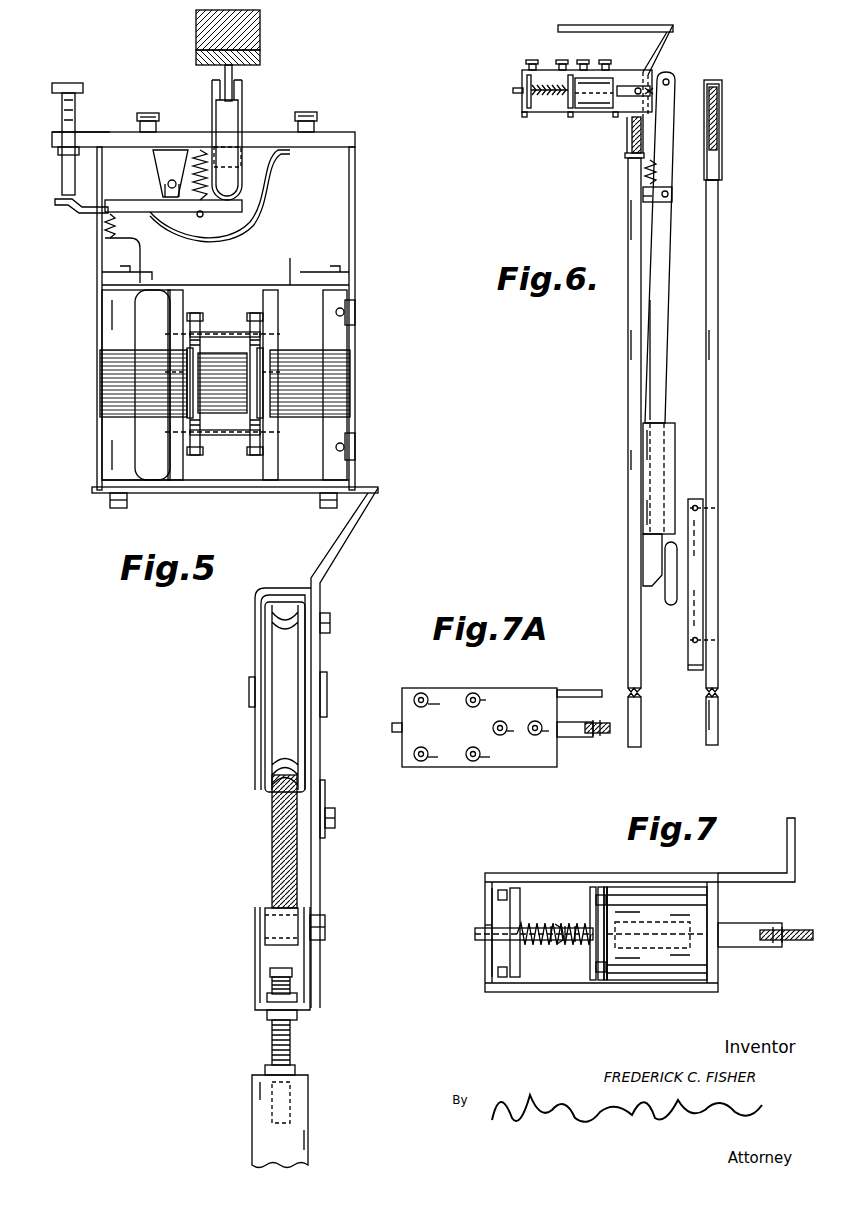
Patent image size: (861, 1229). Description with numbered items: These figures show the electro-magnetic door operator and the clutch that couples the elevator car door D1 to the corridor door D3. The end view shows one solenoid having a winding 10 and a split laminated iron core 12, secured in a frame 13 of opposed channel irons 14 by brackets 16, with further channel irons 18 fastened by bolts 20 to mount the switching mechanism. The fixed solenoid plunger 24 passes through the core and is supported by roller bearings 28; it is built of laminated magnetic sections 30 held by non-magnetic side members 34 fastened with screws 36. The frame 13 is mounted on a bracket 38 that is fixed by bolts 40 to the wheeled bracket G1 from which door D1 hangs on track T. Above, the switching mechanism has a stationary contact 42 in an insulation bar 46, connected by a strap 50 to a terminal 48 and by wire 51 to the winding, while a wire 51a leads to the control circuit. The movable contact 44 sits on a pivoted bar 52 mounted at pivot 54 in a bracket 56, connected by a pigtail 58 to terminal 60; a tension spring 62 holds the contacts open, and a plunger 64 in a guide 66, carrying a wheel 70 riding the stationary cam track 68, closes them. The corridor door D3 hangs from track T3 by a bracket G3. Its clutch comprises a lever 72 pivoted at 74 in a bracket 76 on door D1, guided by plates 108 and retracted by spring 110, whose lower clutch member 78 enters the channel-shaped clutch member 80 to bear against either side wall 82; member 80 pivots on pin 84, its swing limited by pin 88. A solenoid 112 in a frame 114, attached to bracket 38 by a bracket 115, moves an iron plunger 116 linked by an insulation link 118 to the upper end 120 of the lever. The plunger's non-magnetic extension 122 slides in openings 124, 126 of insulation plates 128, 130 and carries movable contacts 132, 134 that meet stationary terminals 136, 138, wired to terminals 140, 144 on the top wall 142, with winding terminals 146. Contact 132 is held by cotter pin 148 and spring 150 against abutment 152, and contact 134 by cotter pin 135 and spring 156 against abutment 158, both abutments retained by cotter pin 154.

In FIG. 5, the winding 10 is at (150, 311).
In FIG. 5, the laminated iron core 12 is at (238, 404).
In FIG. 5, the frame 13 is at (358, 421).
In FIG. 5, the channel irons 14 is at (168, 392).
In FIG. 5, the brackets 16 is at (352, 318).
In FIG. 5, the channel irons 18 is at (97, 247).
In FIG. 5, the bolts 20 is at (102, 272).
In FIG. 5, the solenoid plunger 24 is at (140, 360).
In FIG. 5, the roller bearings 28 is at (256, 314).
In FIG. 5, the magnetic sections 30 is at (190, 416).
In FIG. 5, the longitudinally extending members 34 is at (193, 386).
In FIG. 5, the bolts or screws 36 is at (268, 373).
In FIG. 5, the bracket 38 is at (362, 527).
In FIG. 6, the bracket 38 is at (673, 40).
In FIG. 5, the bolts 40 is at (331, 623).
In FIG. 5, the stationary contact member 42 is at (62, 168).
In FIG. 5, the movable contact member 44 is at (62, 208).
In FIG. 5, the bar of insulation material 46 is at (93, 132).
In FIG. 5, the terminal 48 is at (148, 113).
In FIG. 5, the conductor strap 50 is at (100, 131).
In FIG. 5, the wire 51 is at (141, 242).
In FIG. 5, the wire 51a is at (292, 262).
In FIG. 5, the bar of insulation material 52 is at (243, 206).
In FIG. 5, the pivot 54 is at (174, 180).
In FIG. 5, the bracket 56 is at (166, 150).
In FIG. 5, the pigtail 58 is at (255, 223).
In FIG. 5, the terminal 60 is at (318, 122).
In FIG. 5, the tension spring 62 is at (206, 184).
In FIG. 5, the plunger 64 is at (241, 113).
In FIG. 5, the guide member 66 is at (246, 158).
In FIG. 5, the cam track 68 is at (264, 54).
In FIG. 5, the wheel 70 is at (233, 74).
In FIG. 6, the lever 72 is at (652, 375).
In FIG. 6, the pivot 74 is at (667, 202).
In FIG. 6, the bracket 76 is at (648, 200).
In FIG. 6, the clutch member 78 is at (665, 580).
In FIG. 6, the clutch member 80 is at (687, 664).
In FIG. 6, the side walls 82 is at (704, 602).
In FIG. 6, the pivot pin 84 is at (708, 504).
In FIG. 6, the pin 88 is at (708, 642).
In FIG. 6, the guide plates 108 is at (648, 437).
In FIG. 6, the spring 110 is at (656, 175).
In FIG. 6, the solenoid 112 is at (598, 108).
In FIG. 7, the solenoid 112 is at (659, 976).
In FIG. 6, the casing or frame 114 is at (546, 117).
In FIG. 7, the casing or frame 114 is at (689, 990).
In FIG. 7, the bracket 115 is at (787, 830).
In FIG. 6, the iron plunger 116 is at (630, 86).
In FIG. 7A, the iron plunger 116 is at (579, 737).
In FIG. 7, the iron plunger 116 is at (750, 947).
In FIG. 6, the link 118 is at (656, 90).
In FIG. 7A, the link 118 is at (606, 734).
In FIG. 7, the link 118 is at (797, 941).
In FIG. 6, the upper end 120 is at (676, 81).
In FIG. 6, the extension 122 is at (514, 93).
In FIG. 7A, the extension 122 is at (394, 733).
In FIG. 7, the extension 122 is at (631, 950).
In FIG. 7, the opening 124 is at (613, 893).
In FIG. 7, the opening 126 is at (490, 925).
In FIG. 6, the insulation plate 128 is at (571, 108).
In FIG. 7, the insulation plate 128 is at (615, 892).
In FIG. 6, the insulation plate 130 is at (527, 110).
In FIG. 7, the insulation plate 130 is at (492, 962).
In FIG. 7, the movable contact member 132 is at (513, 893).
In FIG. 7, the movable contact member 134 is at (591, 895).
In FIG. 7, the cotter pin 135 is at (603, 958).
In FIG. 7, the stationary terminals 136 is at (498, 894).
In FIG. 7, the stationary terminals 138 is at (600, 890).
In FIG. 6, the terminals 140 is at (530, 66).
In FIG. 7A, the terminals 140 is at (421, 693).
In FIG. 6, the top wall 142 is at (540, 70).
In FIG. 7A, the top wall 142 is at (530, 768).
In FIG. 6, the terminals 144 is at (563, 60).
In FIG. 7A, the terminals 144 is at (473, 693).
In FIG. 6, the terminals 146 is at (605, 60).
In FIG. 7A, the terminals 146 is at (535, 721).
In FIG. 7, the cotter pin 148 is at (510, 944).
In FIG. 7, the spring 150 is at (535, 922).
In FIG. 7, the abutment member 152 is at (554, 946).
In FIG. 7, the cotter pin 154 is at (561, 923).
In FIG. 7, the spring 156 is at (577, 946).
In FIG. 7, the abutment 158 is at (566, 948).
In FIG. 5, the fixed track T is at (272, 841).
In FIG. 6, the fixed track T is at (631, 140).
In FIG. 6, the track T3 is at (718, 148).
In FIG. 5, the wheeled bracket G1 is at (321, 878).
In FIG. 6, the guide G3 is at (723, 136).
In FIG. 5, the elevator car door D1 is at (304, 1118).
In FIG. 6, the elevator car door D1 is at (627, 492).
In FIG. 6, the corridor door D3 is at (718, 392).